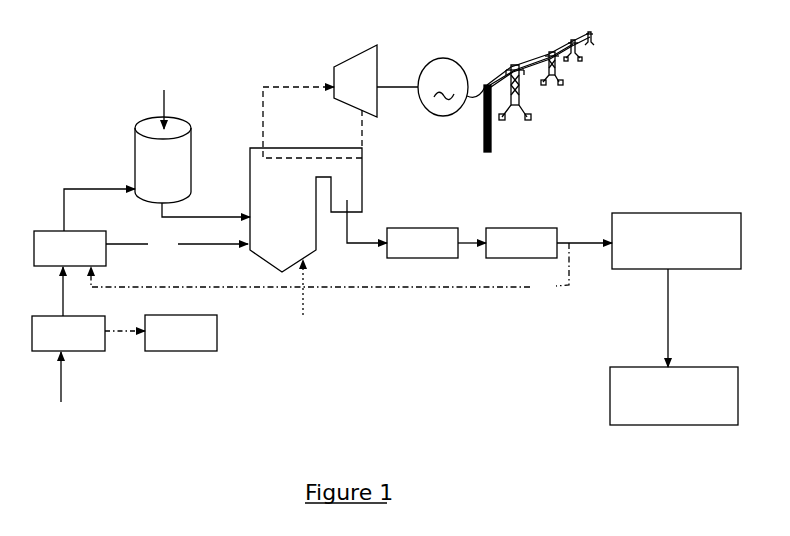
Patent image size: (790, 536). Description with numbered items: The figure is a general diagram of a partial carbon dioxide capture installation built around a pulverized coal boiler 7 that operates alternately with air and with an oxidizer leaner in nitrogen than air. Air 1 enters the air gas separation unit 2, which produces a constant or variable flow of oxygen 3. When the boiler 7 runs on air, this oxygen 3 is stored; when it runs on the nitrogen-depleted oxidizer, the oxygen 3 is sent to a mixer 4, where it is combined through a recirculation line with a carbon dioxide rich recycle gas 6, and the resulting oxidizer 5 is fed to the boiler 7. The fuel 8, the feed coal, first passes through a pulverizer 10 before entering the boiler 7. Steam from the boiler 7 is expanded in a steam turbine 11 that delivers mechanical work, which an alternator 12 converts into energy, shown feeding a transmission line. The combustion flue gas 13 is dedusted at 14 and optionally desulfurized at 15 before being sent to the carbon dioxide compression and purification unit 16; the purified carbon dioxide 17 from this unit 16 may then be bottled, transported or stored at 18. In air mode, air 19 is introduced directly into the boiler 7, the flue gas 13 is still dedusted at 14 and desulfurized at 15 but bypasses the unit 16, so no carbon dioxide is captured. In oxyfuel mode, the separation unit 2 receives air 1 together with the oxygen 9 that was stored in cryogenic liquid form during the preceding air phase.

The air 1 is at (61, 391).
The air gas separation unit 2 is at (68, 333).
The oxygen 3 is at (47, 291).
The mixer 4 is at (70, 248).
The oxidizer 5 is at (177, 244).
The CO2-rich recycle gas 6 is at (330, 269).
The pulverized coal boiler 7 is at (306, 210).
The fuel 8 is at (167, 99).
The stored oxygen 9 is at (161, 333).
The pulverizer 10 is at (157, 174).
The steam turbine 11 is at (320, 101).
The alternator 12 is at (422, 76).
The combustion flue gas 13 is at (367, 221).
The dedusting unit 14 is at (422, 243).
The desulfurization unit 15 is at (535, 243).
The CO2 compression/purification unit 16 is at (676, 241).
The purified CO2 17 is at (691, 318).
The storage 18 is at (674, 396).
The air 19 is at (309, 300).